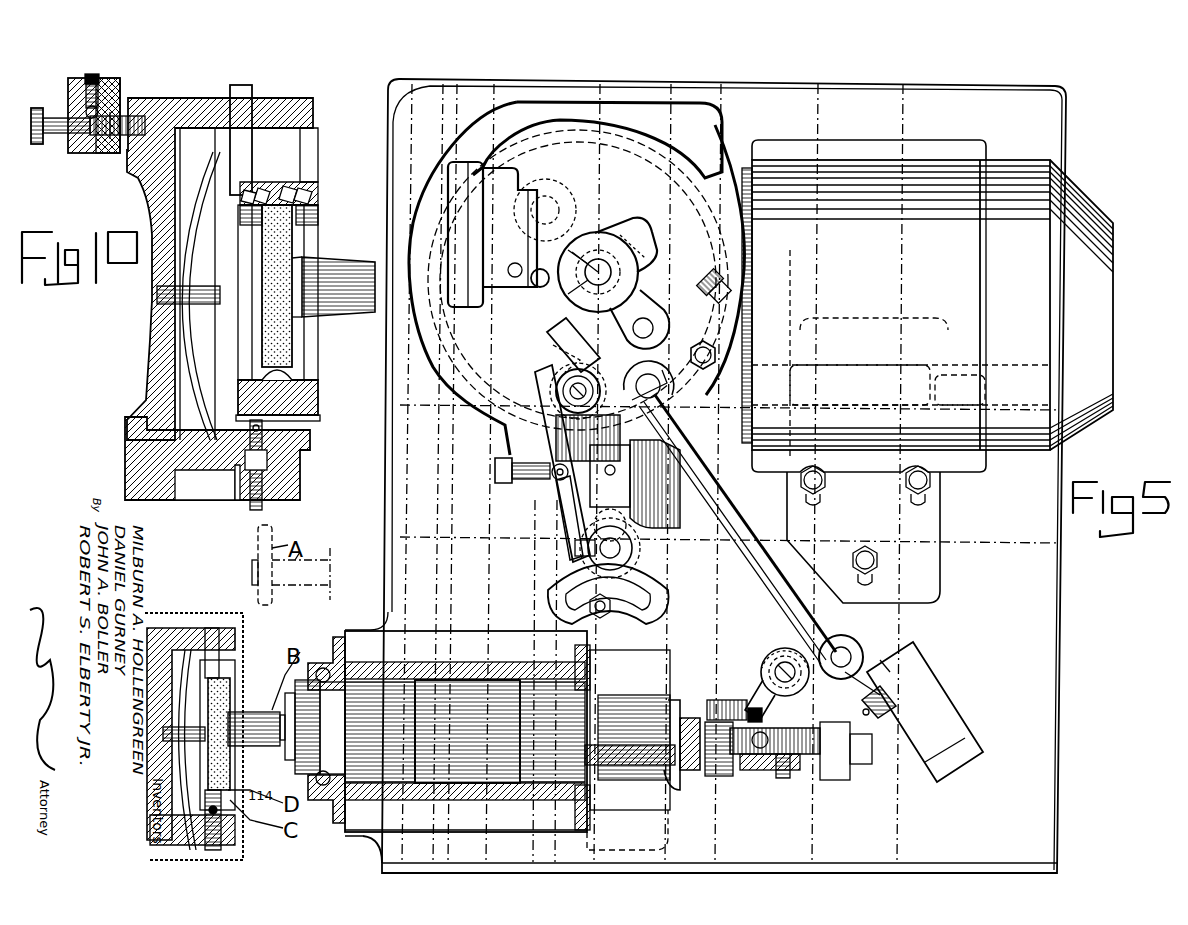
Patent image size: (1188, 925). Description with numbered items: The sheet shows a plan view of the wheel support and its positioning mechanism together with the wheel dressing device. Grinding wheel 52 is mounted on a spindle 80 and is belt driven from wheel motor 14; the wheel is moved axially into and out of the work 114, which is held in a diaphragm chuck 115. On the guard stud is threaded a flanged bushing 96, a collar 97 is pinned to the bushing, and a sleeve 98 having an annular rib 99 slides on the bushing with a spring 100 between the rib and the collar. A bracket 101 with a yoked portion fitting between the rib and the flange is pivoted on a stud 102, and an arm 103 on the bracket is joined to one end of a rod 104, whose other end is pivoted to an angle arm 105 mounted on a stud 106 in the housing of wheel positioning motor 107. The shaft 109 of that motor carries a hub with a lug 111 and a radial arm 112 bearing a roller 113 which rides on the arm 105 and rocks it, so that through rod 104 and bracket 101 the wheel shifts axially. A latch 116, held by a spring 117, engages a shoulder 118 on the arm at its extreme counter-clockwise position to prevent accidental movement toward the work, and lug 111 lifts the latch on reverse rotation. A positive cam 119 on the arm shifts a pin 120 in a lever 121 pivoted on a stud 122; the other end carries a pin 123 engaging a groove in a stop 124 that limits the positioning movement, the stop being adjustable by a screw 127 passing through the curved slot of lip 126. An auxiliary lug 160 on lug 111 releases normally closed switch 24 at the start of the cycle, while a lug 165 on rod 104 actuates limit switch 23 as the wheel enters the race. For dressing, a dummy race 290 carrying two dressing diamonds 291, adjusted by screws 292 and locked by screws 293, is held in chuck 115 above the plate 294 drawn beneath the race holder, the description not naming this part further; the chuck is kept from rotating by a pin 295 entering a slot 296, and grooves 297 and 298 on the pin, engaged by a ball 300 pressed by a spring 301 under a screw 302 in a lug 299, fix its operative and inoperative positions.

In FIG. 5, the wheel motor 14 is at (1072, 200).
In FIG. 5, the limit switch 23 is at (955, 712).
In FIG. 5, the normally closed switch 24 is at (500, 288).
In FIG. 10, the grinding wheel 52 is at (292, 352).
In FIG. 10, the spindle 80 is at (330, 262).
In FIG. 5, the flanged bushing 96 is at (785, 778).
In FIG. 5, the collar 97 is at (705, 772).
In FIG. 5, the sleeve 98 is at (770, 770).
In FIG. 5, the annular rib 99 is at (742, 770).
In FIG. 5, the spring 100 is at (728, 700).
In FIG. 5, the bracket 101 is at (782, 650).
In FIG. 5, the stud 102 is at (775, 652).
In FIG. 5, the arm 103 is at (826, 680).
In FIG. 5, the rod 104 is at (752, 545).
In FIG. 5, the angle arm 105 is at (555, 345).
In FIG. 5, the stud 106 is at (552, 355).
In FIG. 5, the wheel positioning motor 107 is at (705, 175).
In FIG. 5, the shaft 109 is at (592, 260).
In FIG. 5, the lug 111 is at (648, 232).
In FIG. 5, the radial arm 112 is at (650, 292).
In FIG. 5, the roller 113 is at (605, 372).
In FIG. 5, the work 114 is at (255, 672).
In FIG. 10, the diaphragm chuck 115 is at (125, 445).
In FIG. 5, the diaphragm chuck 115 is at (168, 628).
In FIG. 5, the latch 116 is at (698, 278).
In FIG. 5, the spring 117 is at (703, 341).
In FIG. 5, the shoulder 118 is at (673, 392).
In FIG. 5, the positive cam 119 is at (540, 395).
In FIG. 5, the pin 120 is at (556, 450).
In FIG. 5, the lever 121 is at (560, 498).
In FIG. 5, the stud 122 is at (495, 476).
In FIG. 5, the pin 123 is at (575, 548).
In FIG. 5, the stop 124 is at (632, 548).
In FIG. 5, the lip 126 is at (650, 593).
In FIG. 5, the screw 127 is at (603, 615).
In FIG. 5, the auxiliary lug 160 is at (622, 236).
In FIG. 5, the lug 165 is at (875, 665).
In FIG. 10, the dummy race 290 is at (318, 404).
In FIG. 10, the dressing diamonds 291 is at (308, 188).
In FIG. 10, the screws 292 is at (280, 190).
In FIG. 10, the screws 293 is at (318, 205).
In FIG. 10, the plate 294 is at (300, 423).
In FIG. 10, the pin 295 is at (58, 138).
In FIG. 10, the slot 296 is at (135, 103).
In FIG. 10, the groove 297 is at (82, 156).
In FIG. 10, the groove 298 is at (108, 156).
In FIG. 10, the lug 299 is at (98, 76).
In FIG. 10, the ball 300 is at (86, 110).
In FIG. 10, the spring 301 is at (86, 96).
In FIG. 10, the screw 302 is at (85, 79).